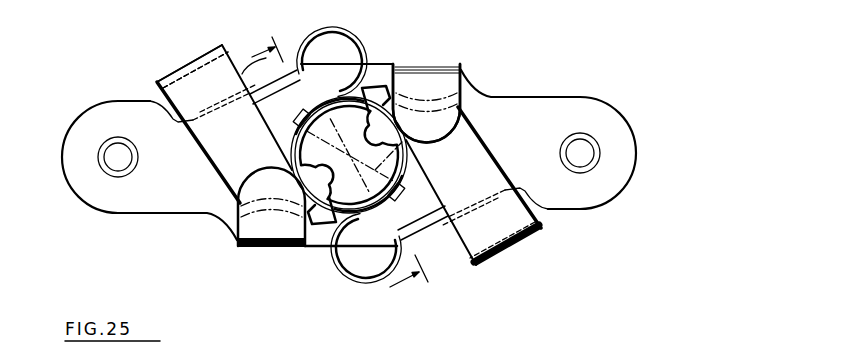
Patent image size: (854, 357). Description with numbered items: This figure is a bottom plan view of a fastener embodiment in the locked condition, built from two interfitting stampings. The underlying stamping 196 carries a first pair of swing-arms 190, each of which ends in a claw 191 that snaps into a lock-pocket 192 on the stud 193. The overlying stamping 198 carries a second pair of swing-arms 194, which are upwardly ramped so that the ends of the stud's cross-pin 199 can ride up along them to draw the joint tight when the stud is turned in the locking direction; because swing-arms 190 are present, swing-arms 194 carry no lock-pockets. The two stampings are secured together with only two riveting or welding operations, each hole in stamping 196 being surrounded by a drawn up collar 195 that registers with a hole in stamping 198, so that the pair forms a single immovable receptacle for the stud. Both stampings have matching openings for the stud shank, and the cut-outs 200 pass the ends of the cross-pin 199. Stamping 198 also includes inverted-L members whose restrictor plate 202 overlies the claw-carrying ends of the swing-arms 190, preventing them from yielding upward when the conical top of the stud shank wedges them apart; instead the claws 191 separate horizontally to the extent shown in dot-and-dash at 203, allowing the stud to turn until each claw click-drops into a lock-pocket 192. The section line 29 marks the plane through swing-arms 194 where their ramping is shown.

The section line 29- 29 is at (340, 172).
The swing-arms 190 is at (213, 148).
The claw 191 is at (270, 247).
The lock-pocket 192 is at (404, 92).
The stud 193 is at (364, 125).
The swing-arms 194 is at (338, 93).
The drawn up collar 195 is at (103, 170).
The underlying stamping 196 is at (242, 74).
The overlying stamping 198 is at (150, 197).
The cross-pin 199 is at (415, 245).
The cut-outs 200 is at (380, 90).
The restrictor plate 202 is at (253, 192).
The horizontal separation of claws 203 is at (505, 94).